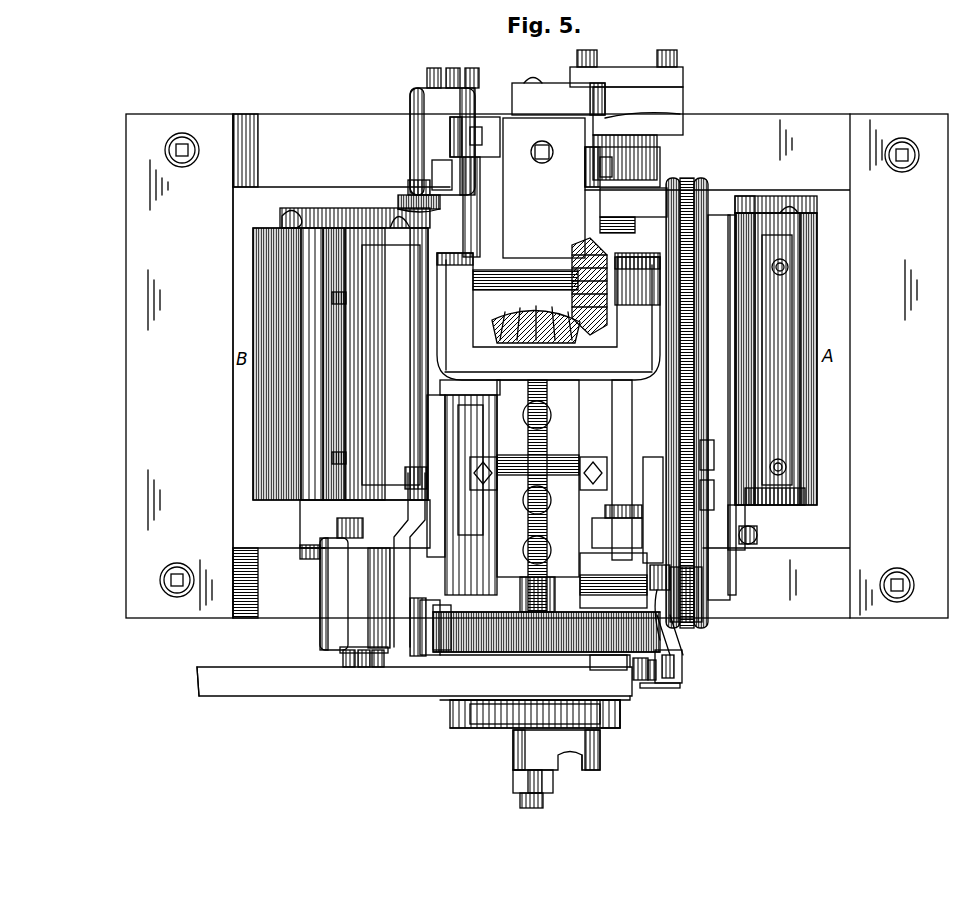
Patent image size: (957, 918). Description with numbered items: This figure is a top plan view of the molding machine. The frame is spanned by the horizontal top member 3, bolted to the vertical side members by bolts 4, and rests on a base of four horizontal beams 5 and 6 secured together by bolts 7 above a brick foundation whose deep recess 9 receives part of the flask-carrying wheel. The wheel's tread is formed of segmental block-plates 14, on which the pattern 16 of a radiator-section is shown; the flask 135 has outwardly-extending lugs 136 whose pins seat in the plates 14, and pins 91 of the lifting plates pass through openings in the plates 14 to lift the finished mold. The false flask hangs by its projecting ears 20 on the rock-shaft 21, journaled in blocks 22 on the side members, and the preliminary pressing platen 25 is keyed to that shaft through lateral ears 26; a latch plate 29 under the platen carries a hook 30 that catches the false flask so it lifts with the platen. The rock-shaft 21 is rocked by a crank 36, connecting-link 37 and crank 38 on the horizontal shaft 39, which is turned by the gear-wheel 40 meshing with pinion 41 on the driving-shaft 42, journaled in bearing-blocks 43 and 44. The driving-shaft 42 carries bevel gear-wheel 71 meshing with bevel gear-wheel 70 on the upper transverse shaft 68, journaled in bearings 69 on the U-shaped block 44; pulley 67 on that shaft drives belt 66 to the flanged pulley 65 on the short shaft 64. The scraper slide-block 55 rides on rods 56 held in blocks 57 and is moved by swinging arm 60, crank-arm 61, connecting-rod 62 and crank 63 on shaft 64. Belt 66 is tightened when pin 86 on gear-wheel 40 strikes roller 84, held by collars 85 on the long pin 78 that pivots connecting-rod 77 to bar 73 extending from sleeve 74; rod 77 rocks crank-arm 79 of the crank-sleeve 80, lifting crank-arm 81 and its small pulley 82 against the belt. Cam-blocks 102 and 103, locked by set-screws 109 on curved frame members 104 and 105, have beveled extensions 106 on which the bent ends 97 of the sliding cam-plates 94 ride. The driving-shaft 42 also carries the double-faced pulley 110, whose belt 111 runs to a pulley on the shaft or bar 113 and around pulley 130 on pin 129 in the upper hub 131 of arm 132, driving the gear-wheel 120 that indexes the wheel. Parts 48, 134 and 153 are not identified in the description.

The horizontal top member 3 is at (541, 347).
The bolts 4 is at (548, 162).
The horizontal beams 5 is at (763, 133).
The horizontal beams 6 is at (137, 398).
The bolts 7 is at (165, 150).
The depression or recess 9 is at (248, 517).
The segmental block-plates 14 is at (328, 218).
The pattern 16 is at (793, 405).
The projecting ears 20 is at (602, 222).
The rock-shaft 21 is at (620, 420).
The bearing-blocks 22 is at (640, 150).
The platen 25 is at (712, 403).
The lateral ears 26 is at (604, 528).
The plate 29 is at (742, 553).
The hook 30 is at (758, 535).
The crank 36 is at (660, 103).
The connecting-link 37 is at (638, 70).
The crank 38 is at (558, 99).
The horizontally-extending shaft 39 is at (540, 80).
The gear-wheel 40 is at (430, 650).
The pinion 41 is at (414, 677).
The horizontal driving-shaft 42 is at (546, 632).
The bearing-block 43 is at (557, 586).
The bearing-block 44 is at (548, 316).
The nut 48 is at (538, 503).
The slide-block 55 is at (458, 525).
The horizontally-extending rods 56 is at (468, 388).
The blocks 57 is at (462, 124).
The swinging arm 60 is at (437, 457).
The crank-arm 61 is at (395, 540).
The connecting-rod 62 is at (392, 575).
The crank 63 is at (396, 618).
The horizontal shaft 64 is at (385, 596).
The flanged pulley 65 is at (700, 593).
The belt 66 is at (686, 338).
The pulley 67 is at (696, 403).
The upper transverse shaft 68 is at (505, 285).
The bearings 69 is at (548, 279).
The bevel gear-wheel 70 is at (612, 305).
The bevel gear-wheel 71 is at (578, 340).
The bar 73 is at (668, 672).
The sleeve 74 is at (615, 605).
The connecting-rod 77 is at (665, 632).
The long pin 78 is at (682, 662).
The crank-arm 79 is at (660, 572).
The crank-sleeve 80 is at (630, 556).
The crank-arm 81 is at (652, 497).
The small flanged pulley 82 is at (688, 464).
The roller 84 is at (615, 663).
The collars 85 is at (637, 665).
The pin 86 is at (606, 730).
The pins 91 is at (346, 297).
The sliding cam-plates 94 is at (415, 185).
The bent ends 97 is at (422, 195).
The cam-block 102 is at (318, 553).
The cam-block 103 is at (410, 95).
The curved frame member 104 is at (368, 650).
The curved frame member 105 is at (428, 178).
The extension 106 is at (337, 530).
The set-screws 109 is at (435, 70).
The double-faced pulley 110 is at (470, 705).
The belt 111 is at (520, 712).
The shaft or bar 113 is at (545, 803).
The gear-wheel 120 is at (665, 632).
The pin 129 is at (565, 768).
The pulley 130 is at (622, 710).
The upper hub 131 is at (598, 748).
The upwardly-extending arm 132 is at (556, 750).
The plate 134 is at (227, 681).
The flask 135 is at (378, 252).
The lugs 136 is at (395, 212).
The hub part 153 is at (522, 757).